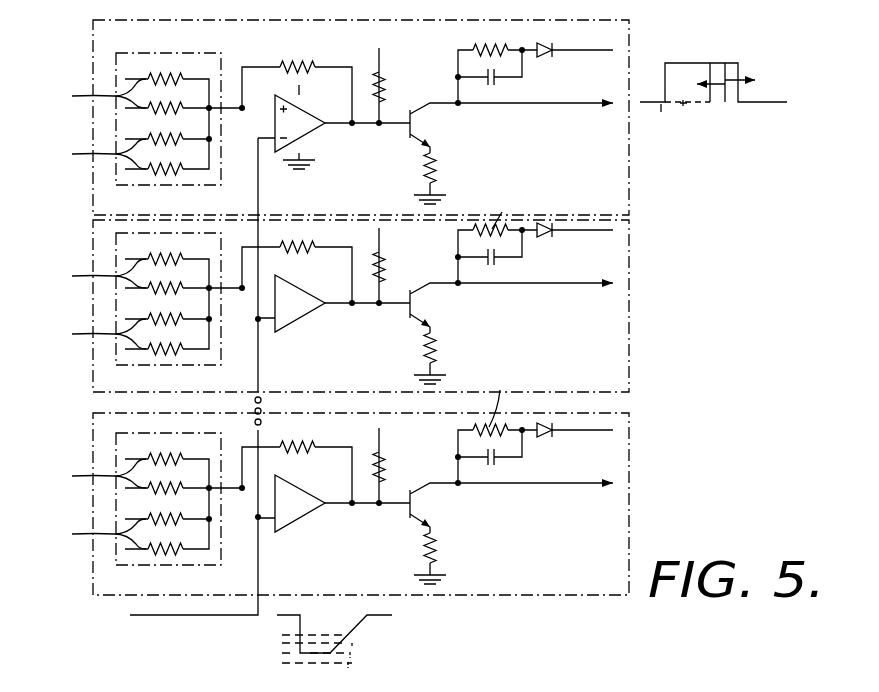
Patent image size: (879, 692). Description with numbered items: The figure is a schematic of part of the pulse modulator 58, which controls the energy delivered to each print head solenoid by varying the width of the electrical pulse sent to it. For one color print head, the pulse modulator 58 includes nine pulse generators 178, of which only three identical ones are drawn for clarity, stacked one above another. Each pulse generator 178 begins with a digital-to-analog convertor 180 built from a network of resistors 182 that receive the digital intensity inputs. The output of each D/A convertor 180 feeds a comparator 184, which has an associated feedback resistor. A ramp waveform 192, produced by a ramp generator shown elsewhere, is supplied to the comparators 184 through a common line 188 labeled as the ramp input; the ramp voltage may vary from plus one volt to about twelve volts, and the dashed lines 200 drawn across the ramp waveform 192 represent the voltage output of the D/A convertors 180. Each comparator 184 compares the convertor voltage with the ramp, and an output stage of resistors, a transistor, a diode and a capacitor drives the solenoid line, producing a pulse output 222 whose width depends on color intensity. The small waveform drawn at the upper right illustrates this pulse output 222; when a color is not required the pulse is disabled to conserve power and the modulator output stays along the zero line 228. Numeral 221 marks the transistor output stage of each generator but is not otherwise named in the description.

The pulse modulator 58 is at (662, 37).
The pulse generator 178 is at (82, 45).
The digital-to-analog convertor 180 is at (152, 53).
The resistors 182 is at (88, 314).
The comparator 184 is at (311, 127).
The line 188 is at (188, 618).
The ramp waveform 192 is at (347, 619).
The dashed lines 200 is at (357, 664).
The output transistor driver 221 is at (440, 112).
The pulse output 222 is at (661, 112).
The zero line 228 is at (683, 107).